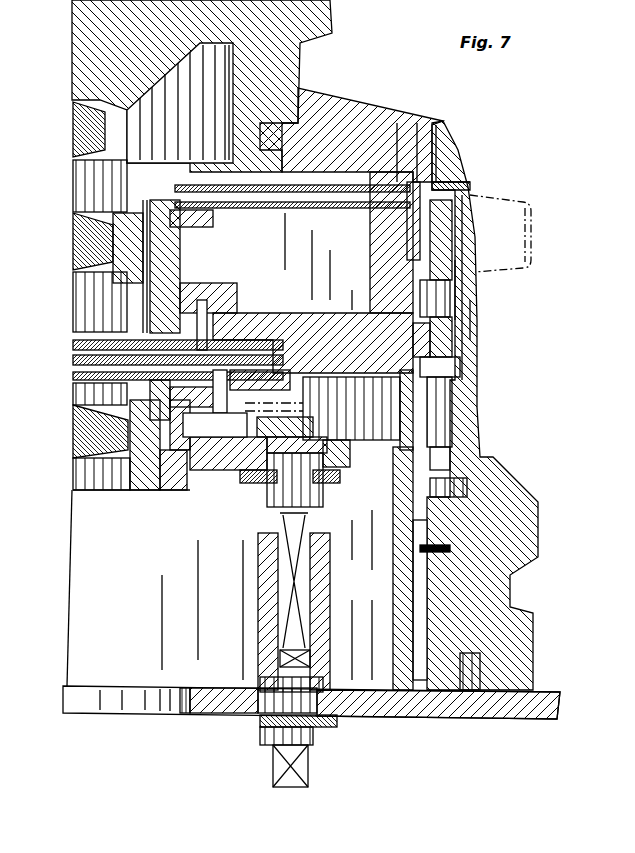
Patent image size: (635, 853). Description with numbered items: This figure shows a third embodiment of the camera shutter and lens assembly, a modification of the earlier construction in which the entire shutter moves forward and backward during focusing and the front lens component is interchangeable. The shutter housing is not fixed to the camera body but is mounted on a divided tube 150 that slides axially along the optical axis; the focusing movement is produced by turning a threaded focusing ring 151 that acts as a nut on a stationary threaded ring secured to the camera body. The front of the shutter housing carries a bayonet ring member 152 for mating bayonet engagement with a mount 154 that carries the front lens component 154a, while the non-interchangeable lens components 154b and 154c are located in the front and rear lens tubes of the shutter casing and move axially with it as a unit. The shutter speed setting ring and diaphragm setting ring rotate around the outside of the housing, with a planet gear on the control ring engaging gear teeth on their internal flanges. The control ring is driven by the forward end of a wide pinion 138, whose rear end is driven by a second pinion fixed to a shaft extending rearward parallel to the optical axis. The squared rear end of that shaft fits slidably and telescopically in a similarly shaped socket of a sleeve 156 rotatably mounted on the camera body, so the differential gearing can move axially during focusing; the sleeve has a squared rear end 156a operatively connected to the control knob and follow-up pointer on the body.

The wide pinion 138 is at (313, 357).
The divided tube 150 is at (320, 480).
The threaded focusing ring 151 is at (510, 595).
The bayonet ring member 152 is at (377, 128).
The mount 154 is at (298, 63).
The front lens component 154a is at (73, 131).
The lens component 154b is at (73, 238).
The lens component 154c is at (80, 436).
The sleeve 156 is at (258, 622).
The squared rear end 156a is at (305, 767).